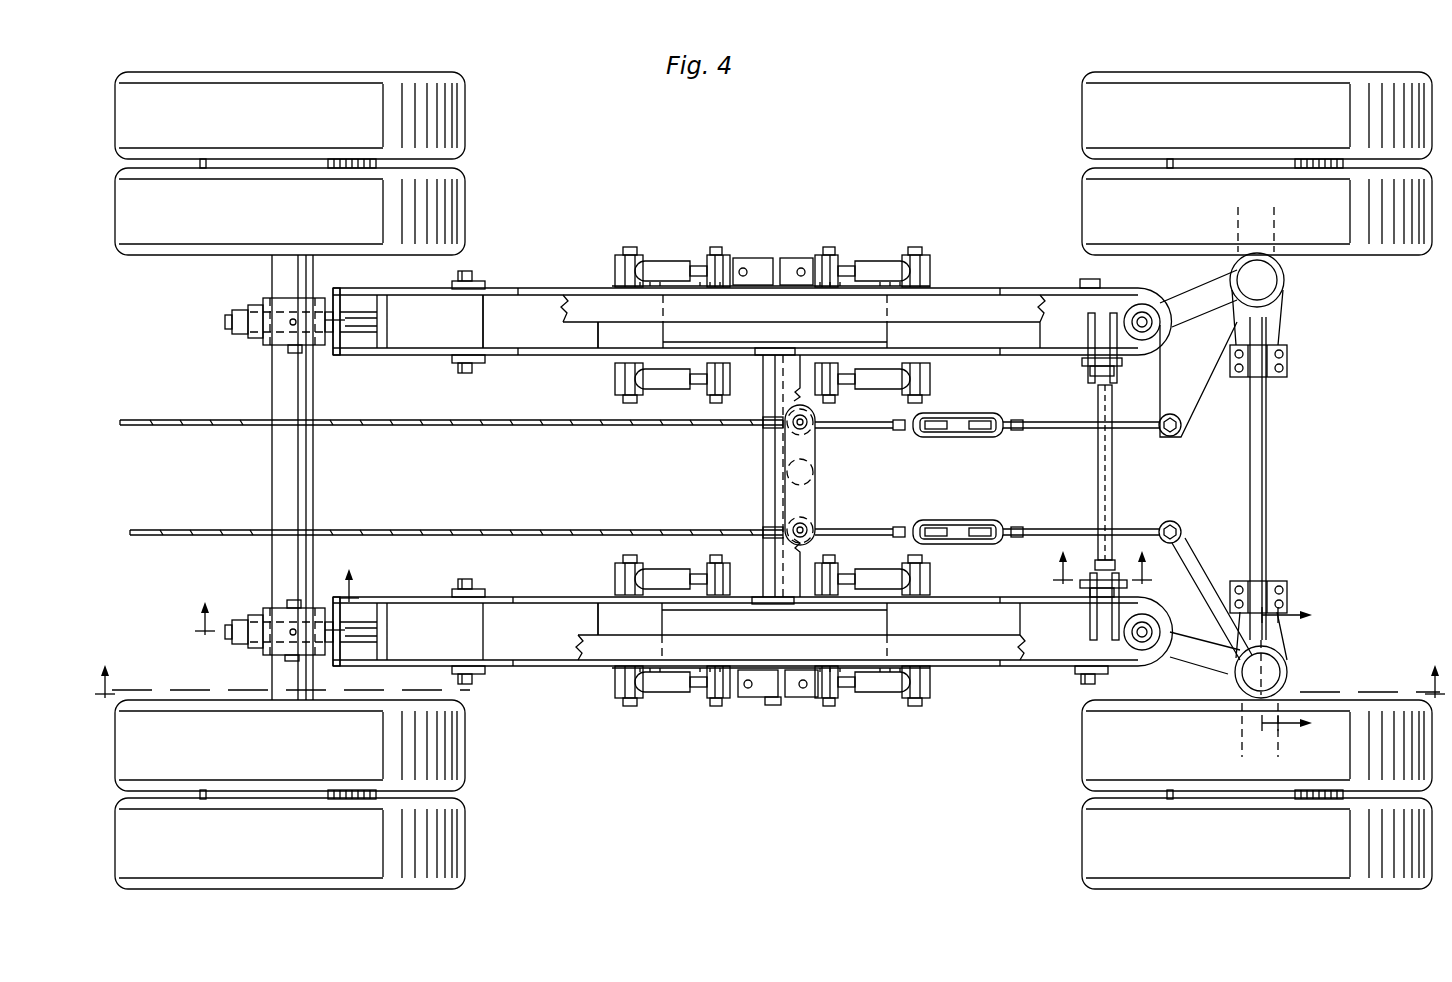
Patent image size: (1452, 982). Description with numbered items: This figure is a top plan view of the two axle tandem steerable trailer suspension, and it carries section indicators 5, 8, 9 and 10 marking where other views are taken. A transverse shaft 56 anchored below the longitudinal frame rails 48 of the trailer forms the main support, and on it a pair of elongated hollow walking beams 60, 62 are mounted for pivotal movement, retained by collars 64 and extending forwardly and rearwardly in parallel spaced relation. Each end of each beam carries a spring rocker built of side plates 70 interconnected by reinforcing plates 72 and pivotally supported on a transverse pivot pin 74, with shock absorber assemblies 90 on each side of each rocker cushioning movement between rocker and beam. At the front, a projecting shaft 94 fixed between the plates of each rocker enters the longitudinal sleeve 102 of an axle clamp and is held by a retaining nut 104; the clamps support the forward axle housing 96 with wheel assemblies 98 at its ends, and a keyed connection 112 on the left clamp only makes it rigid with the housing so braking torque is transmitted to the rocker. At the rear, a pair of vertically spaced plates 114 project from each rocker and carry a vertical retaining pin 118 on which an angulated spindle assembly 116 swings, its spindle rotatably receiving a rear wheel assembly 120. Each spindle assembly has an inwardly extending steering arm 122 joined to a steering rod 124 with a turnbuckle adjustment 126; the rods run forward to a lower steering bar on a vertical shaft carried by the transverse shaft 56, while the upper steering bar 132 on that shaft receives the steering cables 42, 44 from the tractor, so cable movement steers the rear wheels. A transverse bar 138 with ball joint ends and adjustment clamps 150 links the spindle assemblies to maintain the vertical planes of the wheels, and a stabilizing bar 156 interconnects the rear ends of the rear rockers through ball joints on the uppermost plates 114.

The wheel assemblies 98 is at (323, 107).
The wheel assemblies 120 is at (1250, 105).
The axle housing 96 is at (272, 457).
The longitudinal sleeve 102 is at (273, 616).
The retaining nut 104 is at (247, 648).
The keyed connection 112 is at (294, 600).
The longitudinal frame rails 48 is at (976, 310).
The projecting shaft 94 is at (367, 624).
The reinforcing plates 72 is at (607, 620).
The side plates 70 is at (532, 602).
The walking beam 60 is at (745, 338).
The walking beam 62 is at (838, 636).
The collars 64 is at (772, 605).
The transverse pivot pin 74 is at (478, 684).
The shock absorber assembly 90 is at (876, 262).
The transverse shaft 56 is at (760, 442).
The steering bar 132 is at (808, 508).
The steering cable 42 is at (215, 410).
The steering cable 44 is at (178, 537).
The steering rod 124 is at (1040, 524).
The turnbuckle adjustment 126 is at (942, 518).
The steering arm 122 is at (1182, 392).
The stabilizing bar 156 is at (1112, 502).
The retaining pin 118 is at (1141, 318).
The vertically spaced plates 114 is at (1150, 650).
The spindle assembly 116 is at (1200, 303).
The transverse bar 138 is at (1268, 484).
The adjustment clamps 150 is at (1272, 372).
The section line 10 is at (276, 590).
The section line 5 is at (766, 671).
The section line 9 is at (1100, 562).
The section line 8 is at (1297, 671).